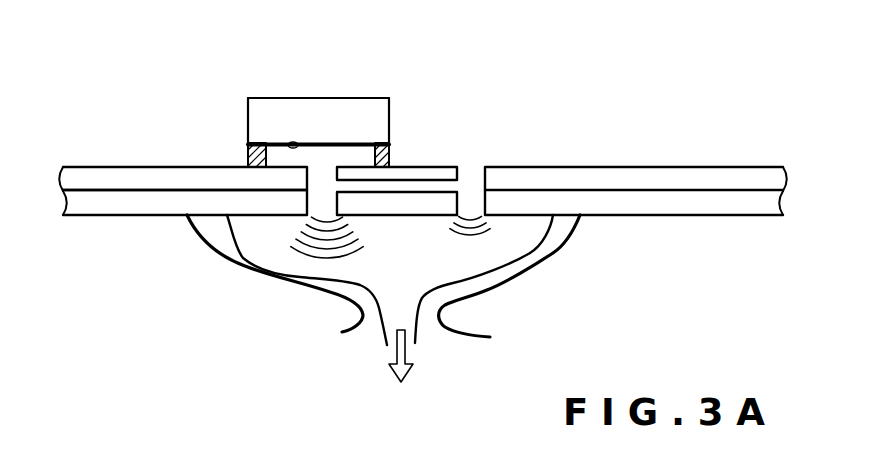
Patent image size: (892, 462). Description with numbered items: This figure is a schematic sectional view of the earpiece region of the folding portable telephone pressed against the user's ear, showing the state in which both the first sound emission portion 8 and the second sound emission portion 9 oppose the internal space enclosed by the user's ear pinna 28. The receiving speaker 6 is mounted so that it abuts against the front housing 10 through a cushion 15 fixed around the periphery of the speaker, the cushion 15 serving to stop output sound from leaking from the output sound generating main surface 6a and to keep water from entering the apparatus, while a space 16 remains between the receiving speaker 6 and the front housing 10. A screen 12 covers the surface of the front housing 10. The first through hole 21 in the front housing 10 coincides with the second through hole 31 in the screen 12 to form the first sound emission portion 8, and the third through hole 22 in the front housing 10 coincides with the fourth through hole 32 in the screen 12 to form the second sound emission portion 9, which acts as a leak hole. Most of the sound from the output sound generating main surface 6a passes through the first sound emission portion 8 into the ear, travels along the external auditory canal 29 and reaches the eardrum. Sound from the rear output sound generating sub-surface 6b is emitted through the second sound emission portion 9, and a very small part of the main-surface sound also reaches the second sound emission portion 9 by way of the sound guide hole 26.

The receiving speaker 6 is at (254, 124).
The output sound generating main surface 6a is at (292, 144).
The output sound generating sub-surface 6b is at (318, 98).
The space 16 is at (325, 157).
The cushion 15 is at (389, 152).
The front housing 10 is at (118, 171).
The screen 12 is at (102, 210).
The first sound emission portion 8 is at (302, 247).
The first through hole 21 is at (330, 174).
The second through hole 31 is at (328, 202).
The sound guide hole 26 is at (428, 184).
The second sound emission portion 9 is at (633, 143).
The third through hole 22 is at (480, 168).
The fourth through hole 32 is at (482, 202).
The left funnel wall 28 is at (291, 286).
The external auditory canal 29 is at (440, 315).